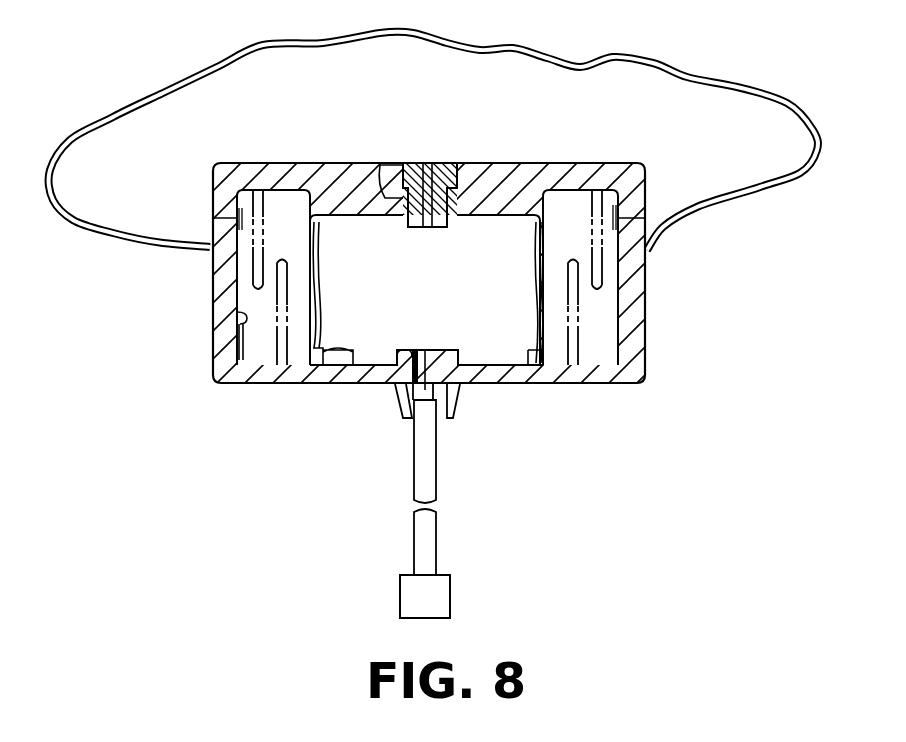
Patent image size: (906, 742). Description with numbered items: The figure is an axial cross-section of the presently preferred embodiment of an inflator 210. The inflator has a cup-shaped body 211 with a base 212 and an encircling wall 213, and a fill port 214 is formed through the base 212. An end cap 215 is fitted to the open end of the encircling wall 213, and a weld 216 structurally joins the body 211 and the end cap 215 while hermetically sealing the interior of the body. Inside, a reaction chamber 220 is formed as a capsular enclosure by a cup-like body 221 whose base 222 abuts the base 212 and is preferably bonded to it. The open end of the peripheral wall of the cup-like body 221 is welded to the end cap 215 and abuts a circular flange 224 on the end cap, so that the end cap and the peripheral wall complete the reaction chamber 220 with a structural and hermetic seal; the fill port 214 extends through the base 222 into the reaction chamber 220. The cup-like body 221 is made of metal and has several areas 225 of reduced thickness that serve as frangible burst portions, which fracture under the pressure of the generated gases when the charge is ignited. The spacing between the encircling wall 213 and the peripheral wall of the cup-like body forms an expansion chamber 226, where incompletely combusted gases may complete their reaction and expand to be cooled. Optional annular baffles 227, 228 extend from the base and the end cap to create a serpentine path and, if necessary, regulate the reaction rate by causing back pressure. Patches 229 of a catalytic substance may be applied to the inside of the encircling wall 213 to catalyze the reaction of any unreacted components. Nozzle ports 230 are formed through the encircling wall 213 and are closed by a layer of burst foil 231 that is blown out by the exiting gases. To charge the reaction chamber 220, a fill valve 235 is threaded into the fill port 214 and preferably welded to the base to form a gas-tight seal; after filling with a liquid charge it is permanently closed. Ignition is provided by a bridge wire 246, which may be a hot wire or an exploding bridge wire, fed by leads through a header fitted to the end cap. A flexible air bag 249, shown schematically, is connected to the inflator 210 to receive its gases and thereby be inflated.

The inflator 210 is at (172, 356).
The cup-shaped body 211 is at (649, 259).
The base 212 is at (511, 163).
The encircling wall 213 is at (648, 292).
The fill port 214 is at (384, 163).
The end cap 215 is at (278, 384).
The weld 216 is at (238, 384).
The reaction chamber 220 is at (371, 300).
The cup-like body 221 is at (309, 248).
The base 222 is at (350, 215).
The circular flange 224 is at (352, 384).
The areas of reduced thickness 225 is at (310, 327).
The expansion chamber 226 is at (580, 205).
The annular baffle 227 is at (258, 207).
The annular baffle 228 is at (310, 277).
The patches of catalytic substance 229 is at (240, 318).
The nozzle ports 230 is at (640, 214).
The burst foil 231 is at (640, 174).
The fill valve 235 is at (432, 163).
The bridge wire 246 is at (410, 348).
The flexible air bag 249 is at (71, 225).